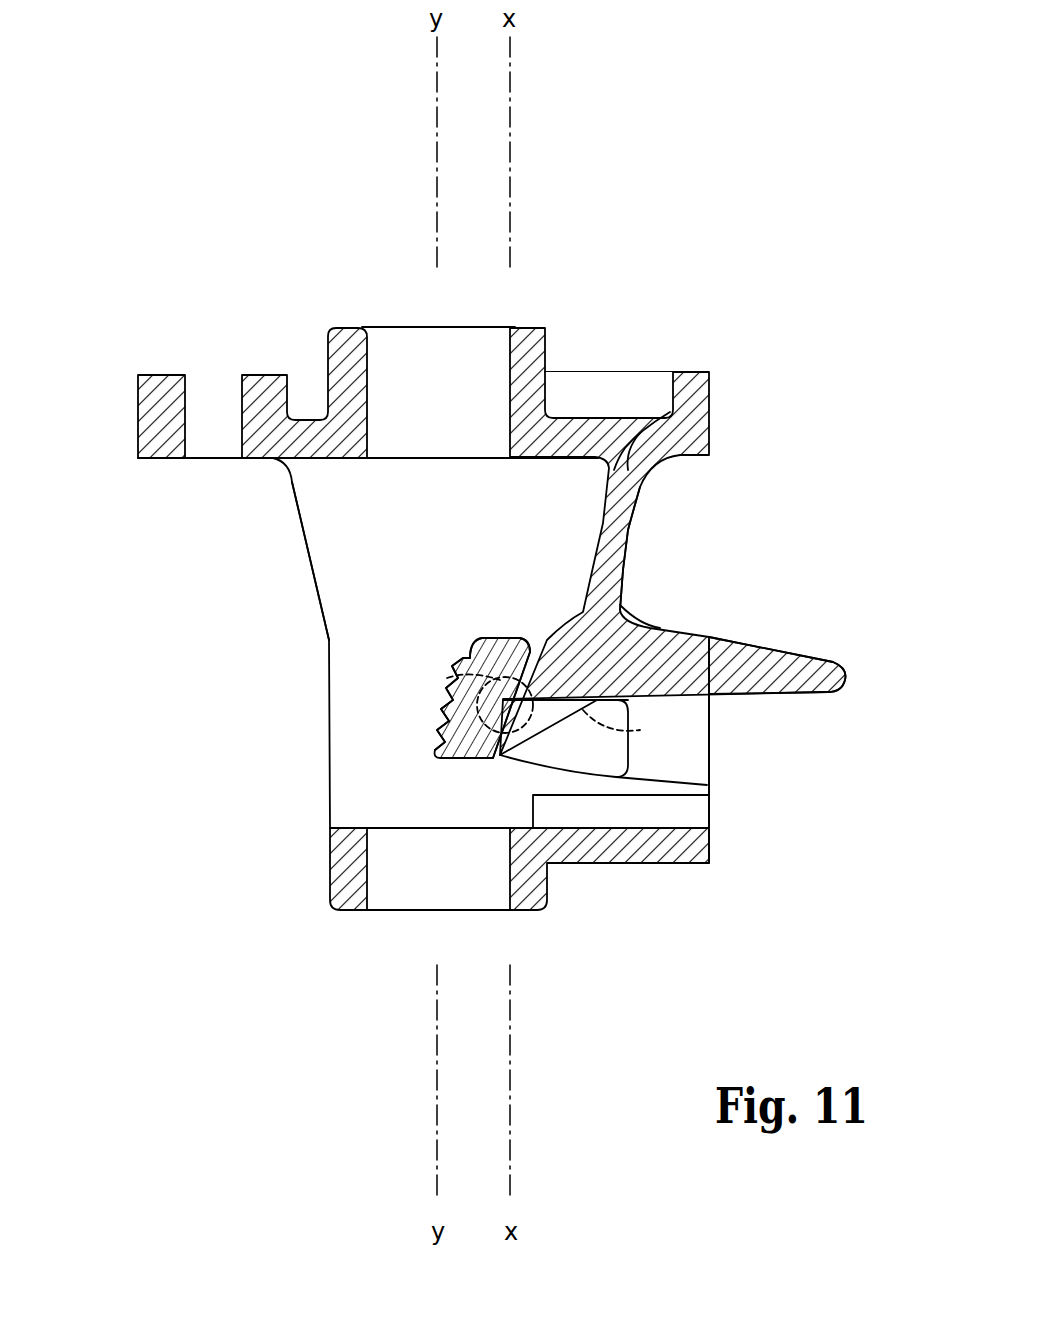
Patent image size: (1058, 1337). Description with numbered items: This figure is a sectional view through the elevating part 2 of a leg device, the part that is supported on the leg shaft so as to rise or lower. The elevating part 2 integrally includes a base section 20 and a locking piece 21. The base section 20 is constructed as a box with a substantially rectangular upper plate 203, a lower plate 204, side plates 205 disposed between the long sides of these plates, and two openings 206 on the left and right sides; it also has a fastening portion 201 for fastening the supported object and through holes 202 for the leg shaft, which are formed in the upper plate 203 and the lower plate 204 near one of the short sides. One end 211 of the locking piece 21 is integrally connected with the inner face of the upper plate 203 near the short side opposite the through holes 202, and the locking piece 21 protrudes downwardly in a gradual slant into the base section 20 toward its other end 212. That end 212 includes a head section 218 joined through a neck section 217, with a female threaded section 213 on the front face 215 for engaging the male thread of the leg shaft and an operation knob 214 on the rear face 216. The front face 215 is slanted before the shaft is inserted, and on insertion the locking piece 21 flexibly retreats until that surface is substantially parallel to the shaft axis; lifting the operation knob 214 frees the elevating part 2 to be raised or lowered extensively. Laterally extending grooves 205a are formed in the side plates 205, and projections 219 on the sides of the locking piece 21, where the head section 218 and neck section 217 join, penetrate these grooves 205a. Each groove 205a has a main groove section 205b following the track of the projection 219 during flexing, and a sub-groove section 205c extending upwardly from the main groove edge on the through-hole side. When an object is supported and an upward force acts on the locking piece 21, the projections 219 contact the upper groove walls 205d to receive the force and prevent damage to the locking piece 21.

The elevating part 2 is at (637, 235).
The base section 20 is at (688, 432).
The locking piece 21 is at (638, 530).
The fastening portion 201 is at (162, 437).
The through holes 202 is at (403, 352).
The upper plate 203 is at (640, 372).
The lower plate 204 is at (645, 867).
The side plates 205 is at (362, 503).
The grooves 205a is at (610, 748).
The main groove section 205b is at (707, 785).
The sub-groove section 205c is at (490, 648).
The upper groove walls 205d is at (583, 710).
The openings 206 is at (688, 598).
The one end of the locking piece 211 is at (670, 412).
The other end of the locking piece 212 is at (463, 757).
The female threaded section 213 is at (440, 716).
The operation knob 214 is at (833, 660).
The front face 215 is at (440, 620).
The rear face 216 is at (660, 575).
The neck section 217 is at (526, 650).
The head section 218 is at (473, 760).
The projections 219 is at (447, 678).